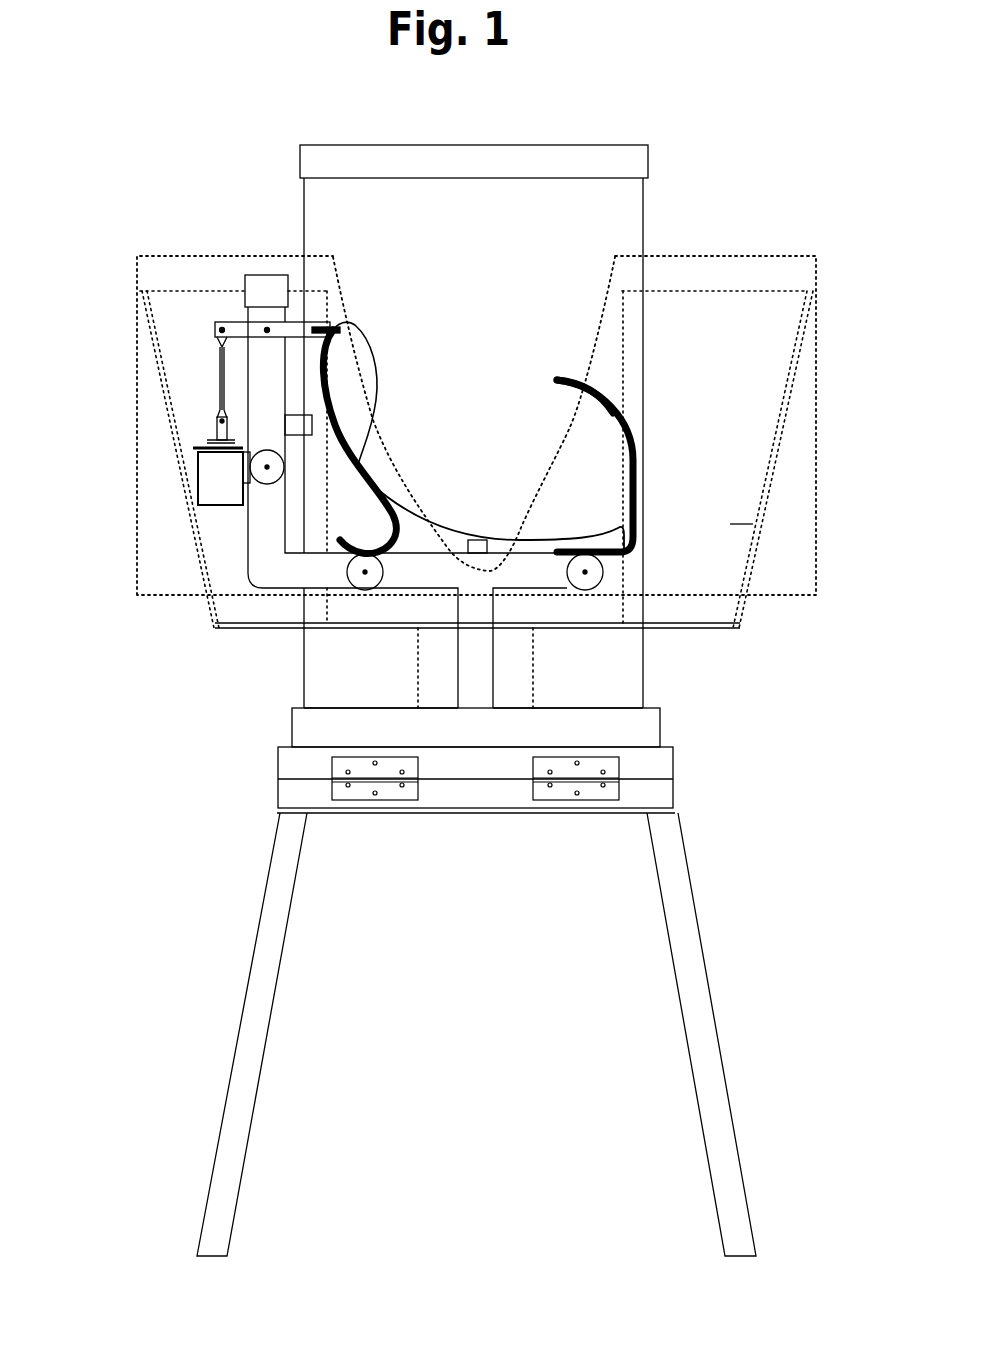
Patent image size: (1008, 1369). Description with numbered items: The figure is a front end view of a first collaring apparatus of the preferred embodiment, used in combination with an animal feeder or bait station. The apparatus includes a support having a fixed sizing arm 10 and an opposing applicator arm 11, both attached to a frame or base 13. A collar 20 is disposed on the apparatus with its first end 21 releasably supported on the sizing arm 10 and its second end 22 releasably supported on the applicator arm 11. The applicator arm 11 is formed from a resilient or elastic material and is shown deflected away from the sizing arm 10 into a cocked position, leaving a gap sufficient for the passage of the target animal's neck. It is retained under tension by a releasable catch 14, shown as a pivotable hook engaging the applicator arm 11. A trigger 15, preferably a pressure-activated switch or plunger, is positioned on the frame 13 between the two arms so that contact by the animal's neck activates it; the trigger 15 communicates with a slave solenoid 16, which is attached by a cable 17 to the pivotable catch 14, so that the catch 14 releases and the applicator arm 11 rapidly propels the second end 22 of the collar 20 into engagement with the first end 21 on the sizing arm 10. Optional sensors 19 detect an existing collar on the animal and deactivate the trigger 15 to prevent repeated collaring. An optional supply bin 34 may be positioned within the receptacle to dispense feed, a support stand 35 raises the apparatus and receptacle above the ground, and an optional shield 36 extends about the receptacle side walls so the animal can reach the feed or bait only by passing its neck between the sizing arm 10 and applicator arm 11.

The sizing arm 10 is at (613, 425).
The applicator arm 11 is at (333, 410).
The frame 13 is at (255, 578).
The releasable catch 14 is at (330, 328).
The trigger 15 is at (475, 537).
The slave solenoid 16 is at (198, 475).
The cable 17 is at (217, 373).
The sensors 19 is at (293, 423).
The collar 20 is at (433, 520).
The first end 21 is at (557, 375).
The second end 22 is at (368, 330).
The supply bin 34 is at (474, 426).
The support stand 35 is at (272, 873).
The shield 36 is at (817, 382).